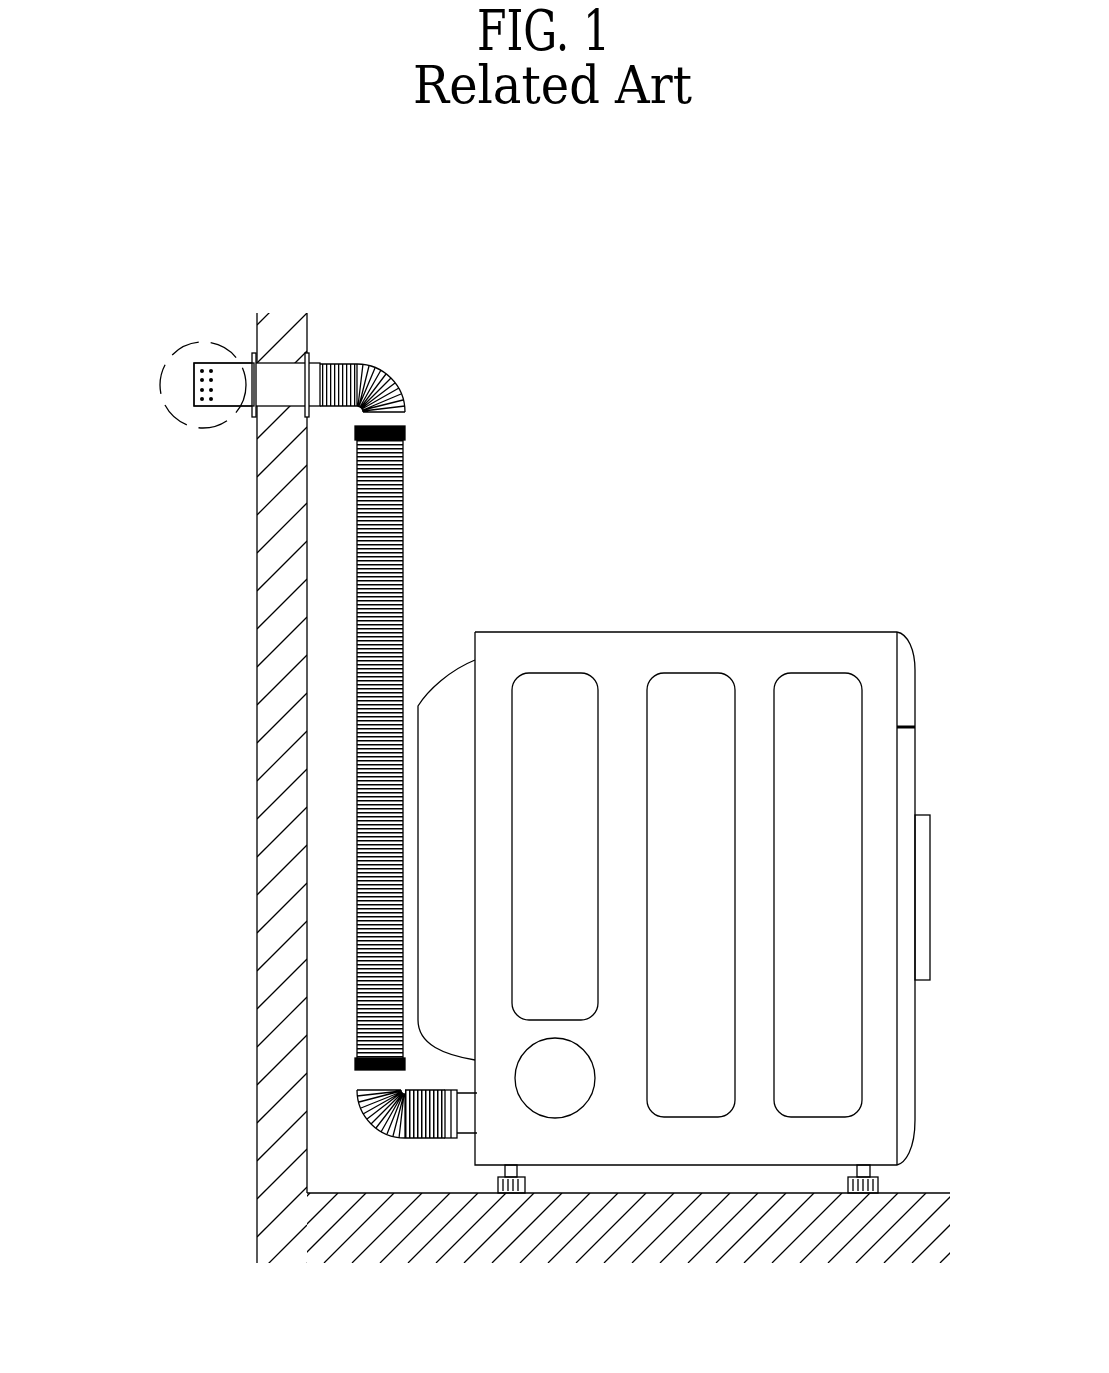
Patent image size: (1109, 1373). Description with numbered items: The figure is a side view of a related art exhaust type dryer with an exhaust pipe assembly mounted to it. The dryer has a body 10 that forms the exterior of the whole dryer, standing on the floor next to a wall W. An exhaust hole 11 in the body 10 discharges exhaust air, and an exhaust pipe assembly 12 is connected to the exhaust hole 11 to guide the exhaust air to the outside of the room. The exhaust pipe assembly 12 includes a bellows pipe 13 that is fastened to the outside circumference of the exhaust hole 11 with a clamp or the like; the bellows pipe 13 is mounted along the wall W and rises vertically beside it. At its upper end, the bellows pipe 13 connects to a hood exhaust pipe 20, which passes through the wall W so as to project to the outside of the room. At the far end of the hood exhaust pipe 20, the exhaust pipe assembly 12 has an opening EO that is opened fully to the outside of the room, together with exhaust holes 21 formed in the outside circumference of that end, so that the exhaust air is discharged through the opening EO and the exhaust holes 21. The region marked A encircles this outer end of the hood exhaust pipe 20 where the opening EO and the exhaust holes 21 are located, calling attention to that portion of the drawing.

The body 10 is at (667, 630).
The exhaust hole 11 is at (467, 1123).
The exhaust pipe assembly 12 is at (271, 751).
The bellows pipe 13 is at (365, 593).
The hood exhaust pipe 20 is at (188, 424).
The exhaust holes 21 is at (195, 397).
The opening EO is at (195, 378).
The wall W is at (272, 920).
The region A is at (203, 369).